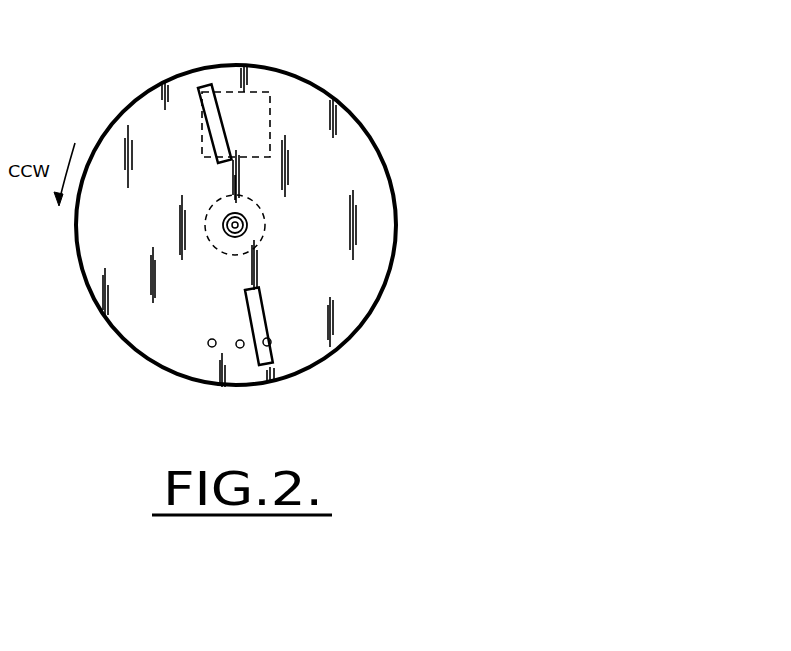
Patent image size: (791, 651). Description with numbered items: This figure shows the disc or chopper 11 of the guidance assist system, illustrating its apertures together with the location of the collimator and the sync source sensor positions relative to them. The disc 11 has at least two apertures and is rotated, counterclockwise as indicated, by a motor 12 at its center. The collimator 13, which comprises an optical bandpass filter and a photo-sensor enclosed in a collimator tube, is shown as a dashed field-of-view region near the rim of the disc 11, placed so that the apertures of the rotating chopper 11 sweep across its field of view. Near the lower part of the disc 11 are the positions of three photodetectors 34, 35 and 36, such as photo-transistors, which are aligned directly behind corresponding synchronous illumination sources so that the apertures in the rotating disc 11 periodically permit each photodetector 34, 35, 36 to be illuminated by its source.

The disc or chopper 11 is at (102, 137).
The motor 12 is at (445, 270).
The collimator 13 is at (397, 43).
The photodetector 34 is at (208, 343).
The photodetector 35 is at (238, 341).
The photodetector 36 is at (271, 341).